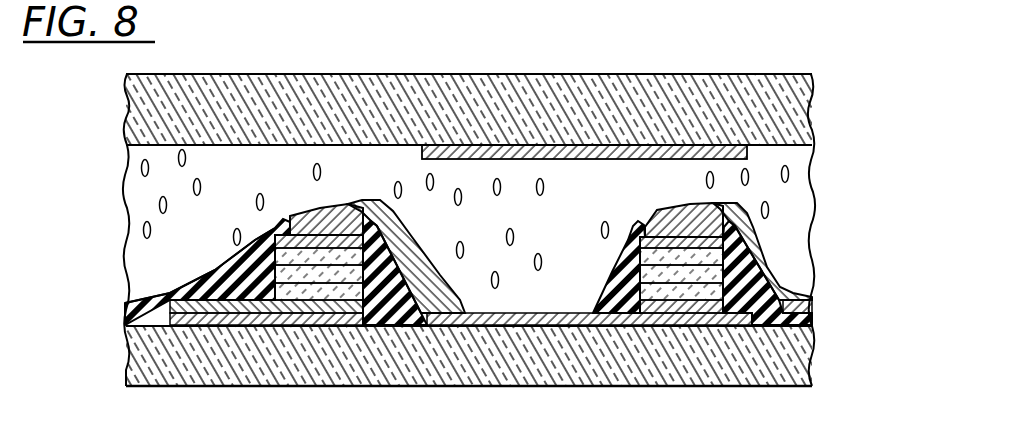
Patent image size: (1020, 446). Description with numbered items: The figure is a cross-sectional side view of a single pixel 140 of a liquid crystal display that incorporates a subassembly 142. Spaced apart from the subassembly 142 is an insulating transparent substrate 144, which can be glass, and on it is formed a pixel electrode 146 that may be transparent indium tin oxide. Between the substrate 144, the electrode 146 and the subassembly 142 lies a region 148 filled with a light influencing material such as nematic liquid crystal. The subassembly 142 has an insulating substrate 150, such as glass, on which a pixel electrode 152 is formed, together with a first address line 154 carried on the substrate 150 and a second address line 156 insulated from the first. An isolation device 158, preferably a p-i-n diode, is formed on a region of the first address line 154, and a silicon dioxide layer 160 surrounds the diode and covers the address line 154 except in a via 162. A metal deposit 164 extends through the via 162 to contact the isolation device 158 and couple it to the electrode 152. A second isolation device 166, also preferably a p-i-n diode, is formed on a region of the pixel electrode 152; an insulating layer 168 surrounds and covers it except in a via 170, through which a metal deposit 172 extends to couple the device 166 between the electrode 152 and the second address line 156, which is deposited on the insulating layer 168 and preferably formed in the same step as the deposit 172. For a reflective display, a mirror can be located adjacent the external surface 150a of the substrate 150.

The pixel 140 is at (818, 179).
The subassembly 142 is at (825, 330).
The insulating transparent substrate 144 is at (145, 114).
The pixel electrode 146 is at (430, 157).
The region 148 is at (246, 196).
The insulating substrate 150 is at (157, 350).
The external surface 150a is at (395, 387).
The pixel electrode 152 is at (522, 313).
The first address line 154 is at (188, 306).
The second address line 156 is at (783, 303).
The isolation device 158 is at (258, 227).
The silicon dioxide layer 160 is at (222, 288).
The via 162 is at (288, 214).
The metal deposit 164 is at (349, 197).
The second isolation device 166 is at (781, 223).
The insulating layer 168 is at (627, 258).
The via 170 is at (656, 213).
The metal deposit 172 is at (673, 213).